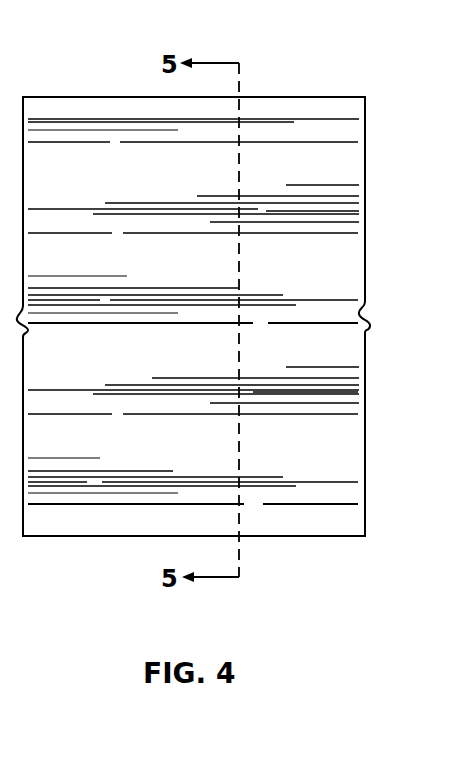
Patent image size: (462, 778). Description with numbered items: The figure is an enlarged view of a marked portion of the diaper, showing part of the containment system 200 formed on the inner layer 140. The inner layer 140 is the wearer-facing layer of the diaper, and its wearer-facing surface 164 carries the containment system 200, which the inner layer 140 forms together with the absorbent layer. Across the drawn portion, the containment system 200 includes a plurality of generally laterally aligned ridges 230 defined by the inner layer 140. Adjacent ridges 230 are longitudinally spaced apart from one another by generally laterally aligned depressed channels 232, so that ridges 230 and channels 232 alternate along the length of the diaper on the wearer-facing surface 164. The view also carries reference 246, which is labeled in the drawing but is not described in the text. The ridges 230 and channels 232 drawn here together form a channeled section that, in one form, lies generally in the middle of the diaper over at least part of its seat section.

The containment system 200 is at (97, 50).
The edge portion 246 is at (15, 67).
The inner layer 140 is at (273, 112).
The ridges 230 is at (348, 112).
The depressed channels 232 is at (355, 153).
The wearer-facing surface 164 is at (213, 272).